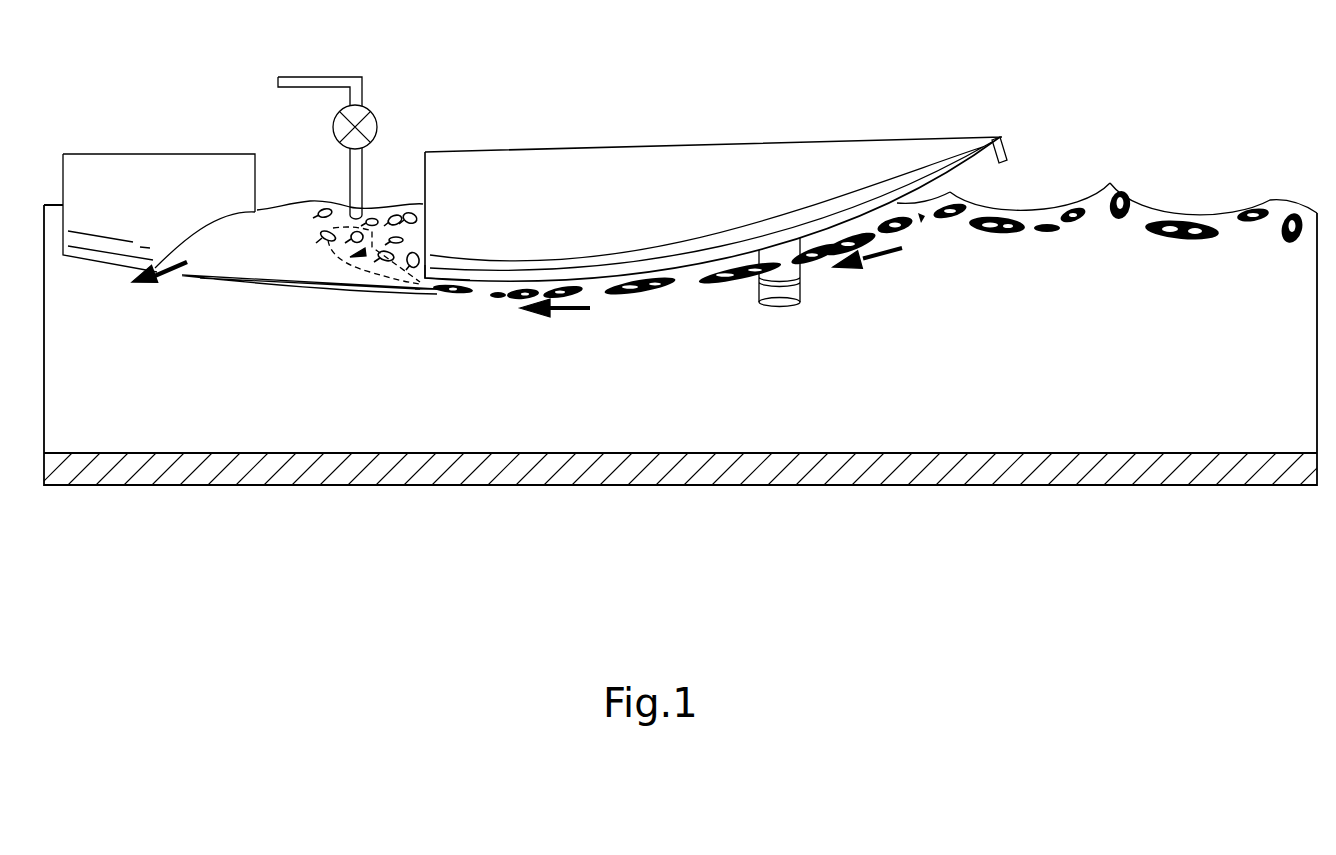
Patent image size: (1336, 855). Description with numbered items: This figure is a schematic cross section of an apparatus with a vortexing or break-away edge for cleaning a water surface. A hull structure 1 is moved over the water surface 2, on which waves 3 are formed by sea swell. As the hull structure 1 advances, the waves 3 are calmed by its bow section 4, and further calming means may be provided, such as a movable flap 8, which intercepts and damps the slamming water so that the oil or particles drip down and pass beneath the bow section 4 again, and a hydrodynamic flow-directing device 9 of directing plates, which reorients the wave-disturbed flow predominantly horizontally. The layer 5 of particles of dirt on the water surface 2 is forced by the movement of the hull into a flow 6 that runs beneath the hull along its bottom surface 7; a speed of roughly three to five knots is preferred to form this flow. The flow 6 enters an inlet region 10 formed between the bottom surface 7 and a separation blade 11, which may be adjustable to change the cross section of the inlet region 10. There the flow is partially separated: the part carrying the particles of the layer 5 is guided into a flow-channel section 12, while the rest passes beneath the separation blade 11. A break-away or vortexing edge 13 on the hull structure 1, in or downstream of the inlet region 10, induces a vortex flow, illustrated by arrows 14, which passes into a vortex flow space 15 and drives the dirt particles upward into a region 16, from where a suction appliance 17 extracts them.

The hull structure 1 is at (632, 162).
The water surface 2 is at (1287, 203).
The waves 3 is at (1112, 183).
The bow section 4 is at (897, 203).
The layer of particles of dirt 5 is at (1181, 215).
The flow 6 is at (885, 257).
The bottom surface 7 is at (681, 268).
The flap 8 is at (1007, 140).
The hydrodynamic flow-directing device 9 is at (778, 308).
The inlet region 10 is at (453, 292).
The separation blade 11 is at (277, 282).
The flow-channel section 12 is at (415, 283).
The vortexing edge 13 is at (425, 277).
The arrows 14 is at (332, 253).
The vortex flow space 15 is at (290, 177).
The region 16 is at (400, 207).
The suction appliance 17 is at (367, 103).